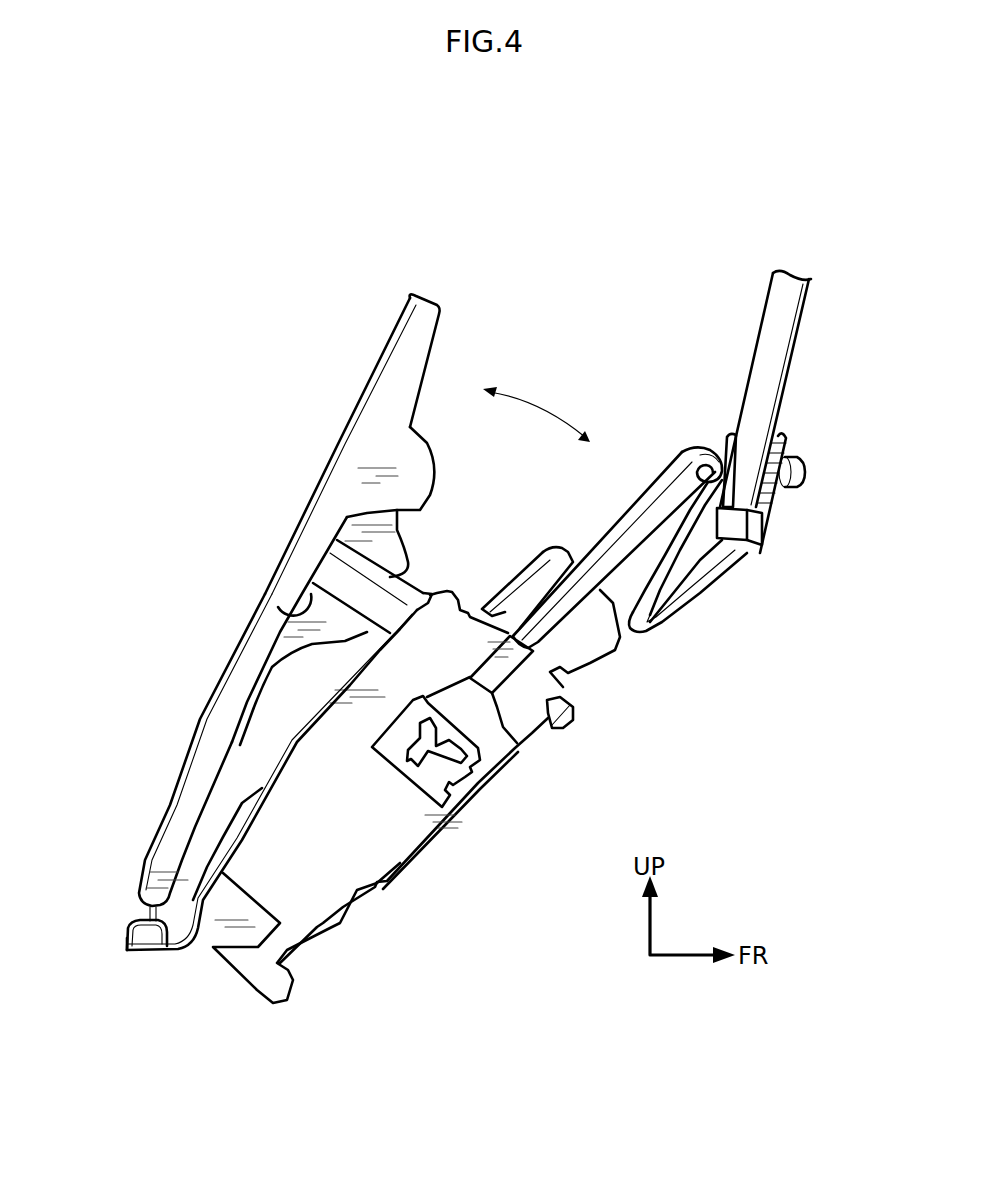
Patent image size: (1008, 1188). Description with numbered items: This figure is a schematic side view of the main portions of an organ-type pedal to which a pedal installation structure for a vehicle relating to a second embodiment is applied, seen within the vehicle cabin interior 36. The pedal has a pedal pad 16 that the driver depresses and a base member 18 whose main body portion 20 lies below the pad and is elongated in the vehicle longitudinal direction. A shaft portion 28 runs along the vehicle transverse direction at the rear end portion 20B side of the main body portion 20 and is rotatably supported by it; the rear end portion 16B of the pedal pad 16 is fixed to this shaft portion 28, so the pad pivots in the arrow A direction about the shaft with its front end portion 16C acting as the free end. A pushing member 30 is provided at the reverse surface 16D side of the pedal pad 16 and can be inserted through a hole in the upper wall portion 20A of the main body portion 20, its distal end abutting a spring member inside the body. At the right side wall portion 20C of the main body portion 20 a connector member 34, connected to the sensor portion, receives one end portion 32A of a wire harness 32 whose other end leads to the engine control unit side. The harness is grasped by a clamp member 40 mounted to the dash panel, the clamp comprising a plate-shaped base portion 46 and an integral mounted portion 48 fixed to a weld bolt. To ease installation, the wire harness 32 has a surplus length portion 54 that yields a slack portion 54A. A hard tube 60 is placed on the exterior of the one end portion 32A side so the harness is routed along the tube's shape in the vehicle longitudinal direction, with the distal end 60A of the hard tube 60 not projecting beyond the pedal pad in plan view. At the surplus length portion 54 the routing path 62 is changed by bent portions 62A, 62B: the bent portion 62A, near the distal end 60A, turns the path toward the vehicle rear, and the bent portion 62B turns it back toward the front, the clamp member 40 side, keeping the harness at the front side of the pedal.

The pedal pad 16 is at (244, 610).
The rear end portion of pedal pad 16B is at (153, 892).
The front end portion of pedal pad 16C is at (407, 343).
The reverse surface of pedal pad 16D is at (287, 617).
The base member 18 is at (345, 770).
The main body portion 20 is at (345, 770).
The upper wall portion 20A is at (460, 595).
The rear end portion of main body portion 20B is at (157, 937).
The right side wall portion 20C is at (405, 827).
The shaft portion 28 is at (147, 928).
The pushing member 30 is at (353, 580).
The wire harness 32 is at (649, 507).
The one end portion of wire harness 32A is at (547, 617).
The connector member 34 is at (447, 773).
The vehicle cabin interior 36 is at (233, 423).
The clamp member 40 is at (795, 459).
The base portion 46 is at (773, 513).
The mounted portion 48 is at (770, 433).
The surplus length portion 54 is at (753, 589).
The slack portion 54A is at (695, 598).
The hard tube 60 is at (617, 523).
The distal end of hard tube 60A is at (690, 457).
The routing path 62 is at (706, 522).
The bent portion 62A is at (707, 447).
The bent portion 62B is at (643, 623).
The arrow A direction A is at (542, 405).